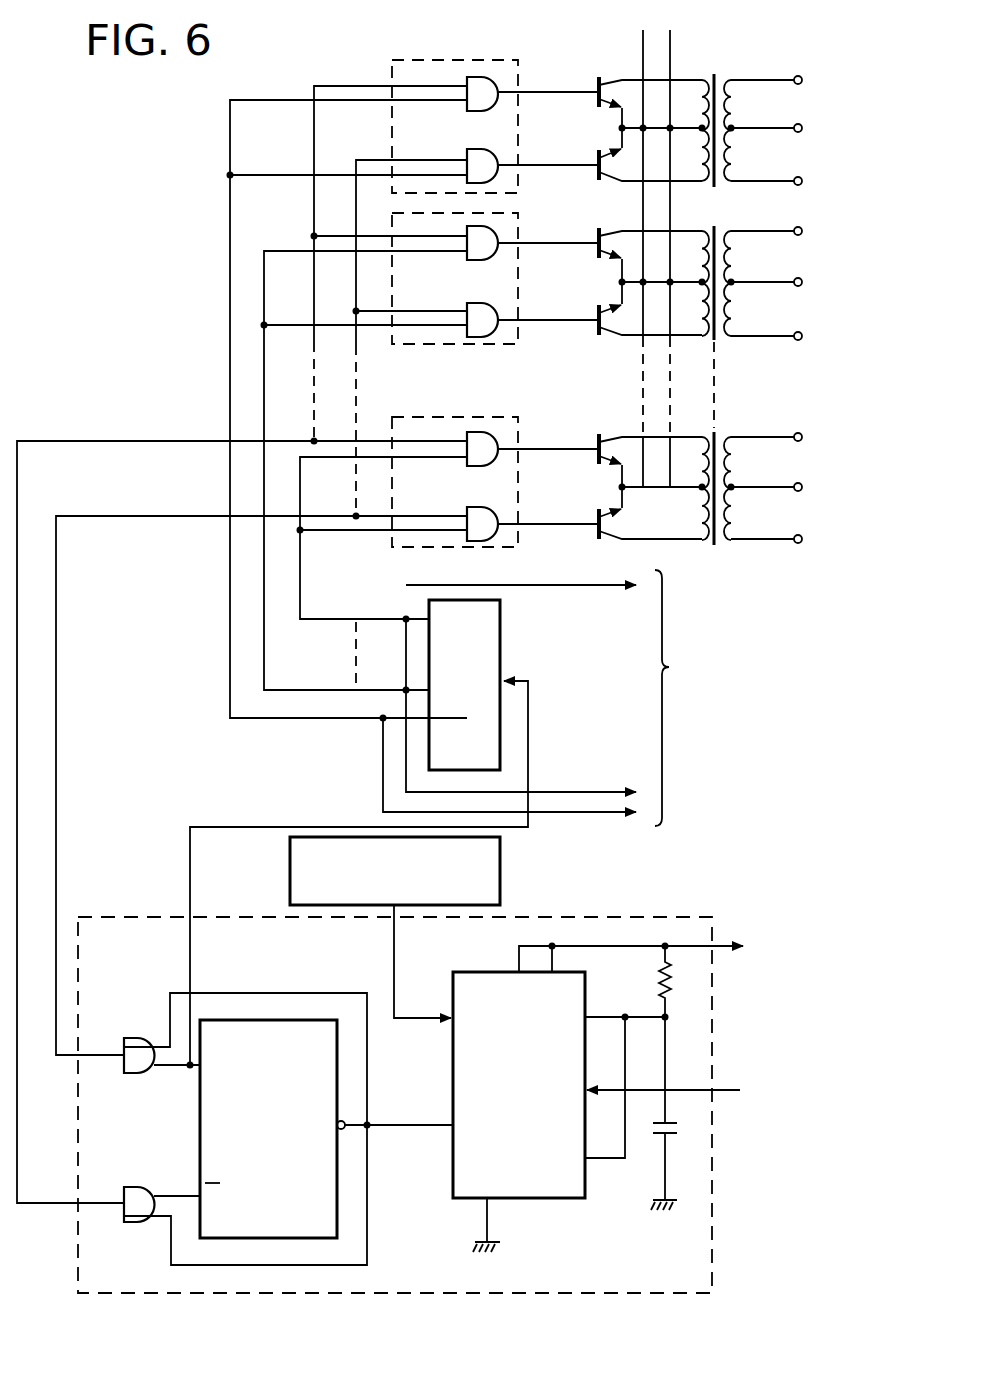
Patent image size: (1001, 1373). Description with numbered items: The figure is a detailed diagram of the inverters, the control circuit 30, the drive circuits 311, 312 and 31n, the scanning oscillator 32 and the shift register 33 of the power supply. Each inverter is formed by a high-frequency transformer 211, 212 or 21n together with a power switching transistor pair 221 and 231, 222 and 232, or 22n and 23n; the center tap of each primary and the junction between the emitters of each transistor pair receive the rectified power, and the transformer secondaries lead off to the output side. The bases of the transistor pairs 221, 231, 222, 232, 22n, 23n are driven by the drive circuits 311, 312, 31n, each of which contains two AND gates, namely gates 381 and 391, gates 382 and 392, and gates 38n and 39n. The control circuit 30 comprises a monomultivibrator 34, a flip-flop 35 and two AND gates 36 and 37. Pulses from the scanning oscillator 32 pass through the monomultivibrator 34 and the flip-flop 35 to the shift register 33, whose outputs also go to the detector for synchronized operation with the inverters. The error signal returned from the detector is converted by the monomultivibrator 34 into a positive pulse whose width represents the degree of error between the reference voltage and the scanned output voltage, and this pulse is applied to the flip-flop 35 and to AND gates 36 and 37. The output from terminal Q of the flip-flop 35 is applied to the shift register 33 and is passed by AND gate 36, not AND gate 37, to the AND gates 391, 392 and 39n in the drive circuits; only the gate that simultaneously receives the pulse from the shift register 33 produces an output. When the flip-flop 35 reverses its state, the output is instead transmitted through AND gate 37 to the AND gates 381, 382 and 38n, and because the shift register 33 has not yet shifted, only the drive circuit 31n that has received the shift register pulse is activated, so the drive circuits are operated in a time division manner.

The control circuit 30 is at (583, 1295).
The drive circuit 311 is at (392, 72).
The drive circuit 312 is at (518, 338).
The drive circuit 31n is at (518, 545).
The scanning oscillator 32 is at (500, 868).
The shift register 33 is at (500, 630).
The monomultivibrator 34 is at (563, 1198).
The flip-flop 35 is at (200, 1116).
The AND gate 36 is at (145, 1038).
The AND gate 37 is at (145, 1187).
The AND gate 381 is at (467, 104).
The AND gate 391 is at (467, 156).
The AND gate 382 is at (467, 254).
The AND gate 392 is at (467, 308).
The AND gate 38n is at (467, 460).
The AND gate 39n is at (467, 512).
The power switching transistor 221 is at (599, 88).
The power switching transistor 231 is at (599, 162).
The power switching transistor 222 is at (599, 240).
The power switching transistor 232 is at (599, 314).
The power switching transistor 22n is at (599, 446).
The power switching transistor 23n is at (599, 518).
The high-frequency transformer 211 is at (714, 72).
The high-frequency transformer 212 is at (714, 226).
The high-frequency transformer 21n is at (716, 432).